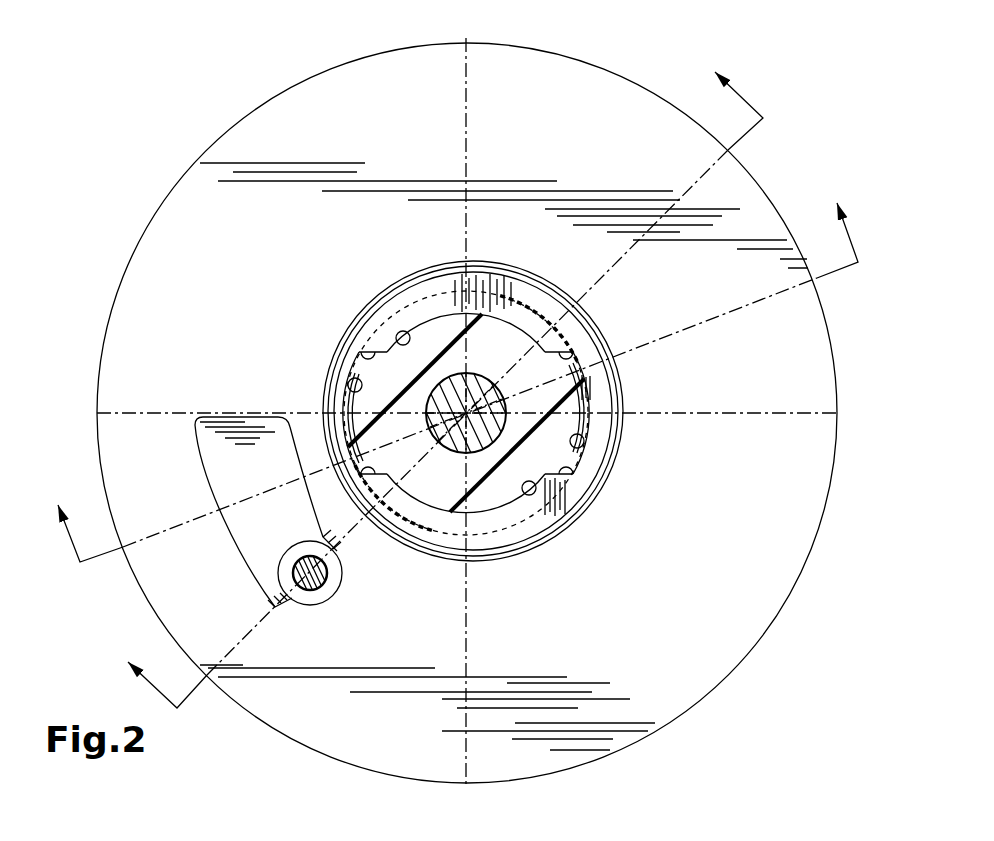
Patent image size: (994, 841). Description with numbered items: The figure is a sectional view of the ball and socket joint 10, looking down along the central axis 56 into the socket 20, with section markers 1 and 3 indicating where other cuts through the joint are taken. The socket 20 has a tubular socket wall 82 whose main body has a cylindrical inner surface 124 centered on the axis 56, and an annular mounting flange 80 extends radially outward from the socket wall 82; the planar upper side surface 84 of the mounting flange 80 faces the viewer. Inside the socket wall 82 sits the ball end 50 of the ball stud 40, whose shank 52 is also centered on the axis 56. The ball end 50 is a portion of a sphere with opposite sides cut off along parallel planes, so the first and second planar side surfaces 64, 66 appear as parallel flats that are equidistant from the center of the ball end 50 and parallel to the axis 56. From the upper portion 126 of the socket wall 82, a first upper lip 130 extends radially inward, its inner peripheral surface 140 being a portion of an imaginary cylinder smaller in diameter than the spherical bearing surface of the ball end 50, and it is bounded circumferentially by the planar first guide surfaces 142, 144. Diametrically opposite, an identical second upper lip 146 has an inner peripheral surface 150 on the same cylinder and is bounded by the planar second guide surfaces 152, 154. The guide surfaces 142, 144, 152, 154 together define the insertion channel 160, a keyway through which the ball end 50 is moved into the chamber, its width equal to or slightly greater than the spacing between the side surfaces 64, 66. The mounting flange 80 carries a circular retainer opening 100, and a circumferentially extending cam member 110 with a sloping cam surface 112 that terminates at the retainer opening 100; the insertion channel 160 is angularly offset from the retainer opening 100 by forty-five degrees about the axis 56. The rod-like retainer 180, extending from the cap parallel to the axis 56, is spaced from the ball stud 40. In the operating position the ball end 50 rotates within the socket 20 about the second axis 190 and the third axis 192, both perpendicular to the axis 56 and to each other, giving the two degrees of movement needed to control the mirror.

The ball and socket joint 10 is at (120, 178).
The socket 20 is at (818, 555).
The ball stud 40 is at (489, 484).
The ball end 50 is at (546, 427).
The shank 52 is at (462, 417).
The longitudinal central axis 56 is at (462, 417).
The first planar side surface 64 is at (500, 468).
The second planar side surface 66 is at (413, 290).
The annular mounting flange 80 is at (752, 665).
The socket wall 82 is at (563, 290).
The upper side surface 84 is at (758, 596).
The retainer opening 100 is at (321, 598).
The cam member 110 is at (200, 486).
The cam surface 112 is at (253, 533).
The cylindrical inner surface 124 is at (600, 440).
The upper portion of the socket wall 126 is at (527, 277).
The first upper lip 130 is at (478, 298).
The inner peripheral surface 140 is at (410, 330).
The first guide surface 142 is at (338, 400).
The first guide surface 144 is at (575, 345).
The second upper lip 146 is at (458, 525).
The inner peripheral surface 150 is at (444, 527).
The second guide surface 152 is at (335, 478).
The second guide surface 154 is at (608, 465).
The insertion channel 160 is at (335, 398).
The retainer 180 is at (307, 588).
The second axis 190 is at (738, 400).
The third axis 192 is at (466, 115).
The section line 1- 1 is at (437, 379).
The section line 3- 3 is at (452, 370).